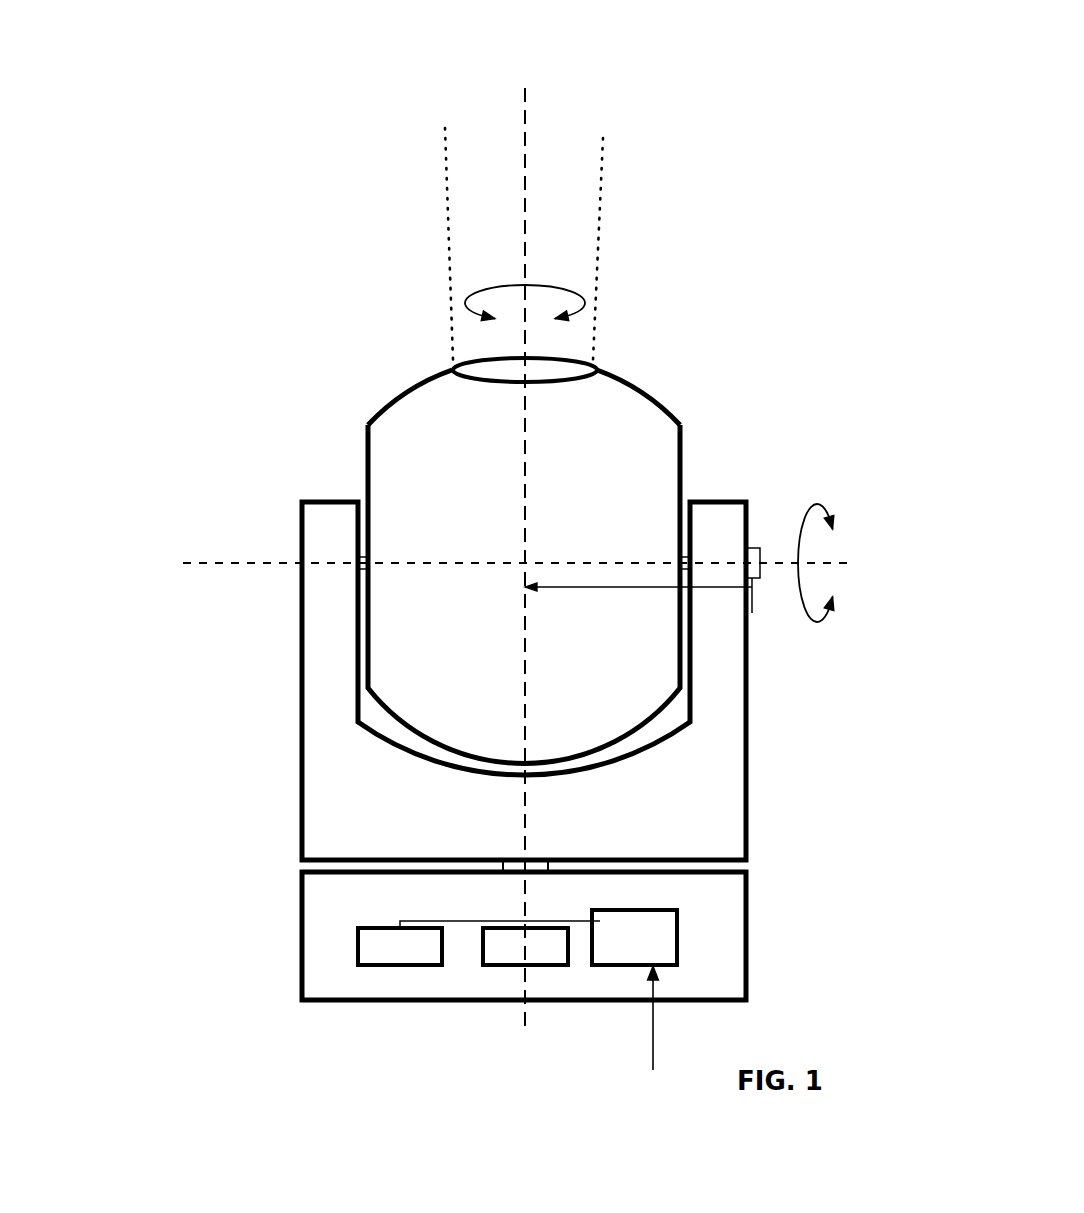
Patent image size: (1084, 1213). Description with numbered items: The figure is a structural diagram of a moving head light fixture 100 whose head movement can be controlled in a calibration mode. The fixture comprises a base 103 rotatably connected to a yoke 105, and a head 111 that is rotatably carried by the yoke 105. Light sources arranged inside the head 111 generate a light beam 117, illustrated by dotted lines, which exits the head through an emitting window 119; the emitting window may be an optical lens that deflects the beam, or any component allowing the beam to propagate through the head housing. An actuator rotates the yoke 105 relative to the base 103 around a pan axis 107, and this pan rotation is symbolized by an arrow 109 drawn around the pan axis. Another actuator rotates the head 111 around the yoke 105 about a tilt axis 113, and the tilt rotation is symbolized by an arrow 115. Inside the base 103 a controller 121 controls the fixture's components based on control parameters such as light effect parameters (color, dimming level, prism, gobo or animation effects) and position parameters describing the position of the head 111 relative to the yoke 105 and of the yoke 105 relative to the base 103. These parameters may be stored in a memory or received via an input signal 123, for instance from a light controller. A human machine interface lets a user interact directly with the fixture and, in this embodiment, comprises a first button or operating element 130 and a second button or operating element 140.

The moving head light fixture 100 is at (258, 139).
The base 103 is at (760, 965).
The yoke 105 is at (759, 770).
The pan axis 107 is at (525, 145).
The arrow 109 is at (497, 288).
The head 111 is at (652, 379).
The tilt axis 113 is at (202, 553).
The arrow 115 is at (817, 504).
The light beam 117 is at (598, 247).
The emitting window 119 is at (550, 358).
The controller 121 is at (634, 937).
The input signal 123 is at (675, 1018).
The first button or operating element 130 is at (400, 946).
The second button or operating element 140 is at (525, 946).